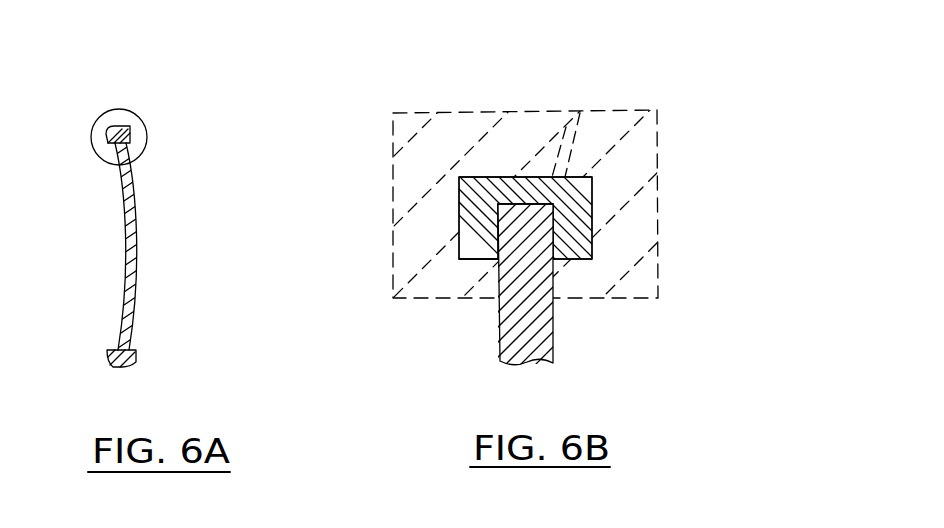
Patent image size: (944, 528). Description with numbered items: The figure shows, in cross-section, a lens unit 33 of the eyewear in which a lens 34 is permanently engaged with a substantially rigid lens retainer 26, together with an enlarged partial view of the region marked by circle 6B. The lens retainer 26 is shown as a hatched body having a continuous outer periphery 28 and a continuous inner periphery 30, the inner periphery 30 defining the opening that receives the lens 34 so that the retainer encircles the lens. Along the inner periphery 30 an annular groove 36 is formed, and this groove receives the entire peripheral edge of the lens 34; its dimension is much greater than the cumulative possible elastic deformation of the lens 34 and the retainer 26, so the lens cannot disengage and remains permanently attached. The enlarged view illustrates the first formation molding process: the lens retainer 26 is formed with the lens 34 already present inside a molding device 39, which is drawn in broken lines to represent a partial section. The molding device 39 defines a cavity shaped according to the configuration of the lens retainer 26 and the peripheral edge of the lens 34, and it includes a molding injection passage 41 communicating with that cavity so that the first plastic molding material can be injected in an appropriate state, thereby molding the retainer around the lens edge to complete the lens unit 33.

In FIG. 6A, the circle 6B is at (99, 118).
In FIG. 6A, the lens retainer 26 is at (121, 367).
In FIG. 6B, the lens retainer 26 is at (592, 234).
In FIG. 6B, the continuous outer periphery 28 is at (487, 177).
In FIG. 6B, the continuous inner periphery 30 is at (468, 260).
In FIG. 6A, the lens unit 33 is at (88, 258).
In FIG. 6B, the lens unit 33 is at (468, 335).
In FIG. 6A, the lens 34 is at (134, 210).
In FIG. 6B, the lens 34 is at (548, 333).
In FIG. 6B, the annular groove 36 is at (505, 206).
In FIG. 6B, the molding device 39 is at (658, 156).
In FIG. 6B, the molding injection passage 41 is at (580, 113).